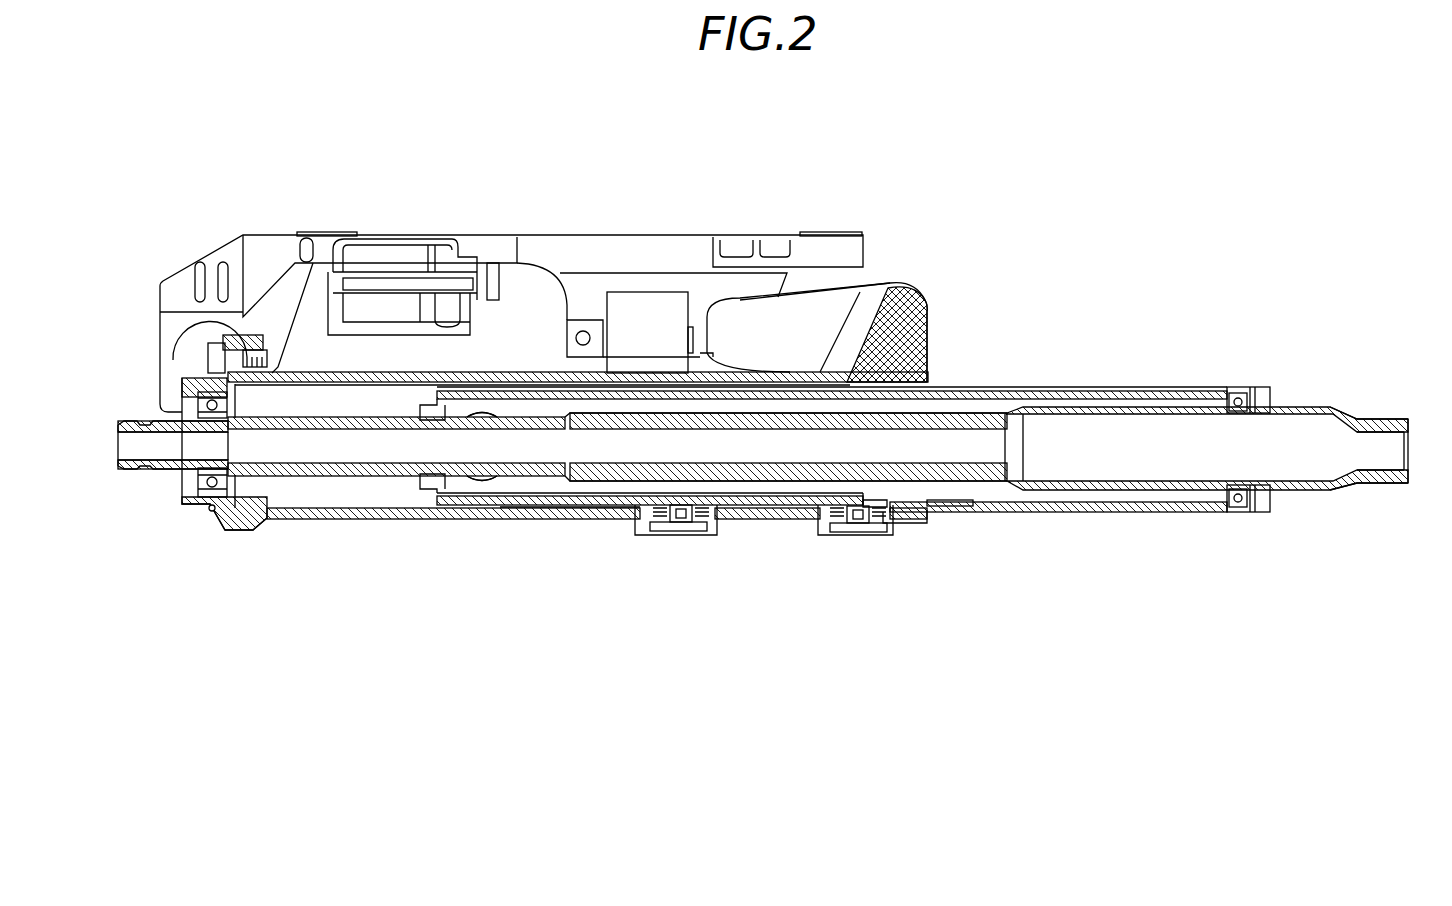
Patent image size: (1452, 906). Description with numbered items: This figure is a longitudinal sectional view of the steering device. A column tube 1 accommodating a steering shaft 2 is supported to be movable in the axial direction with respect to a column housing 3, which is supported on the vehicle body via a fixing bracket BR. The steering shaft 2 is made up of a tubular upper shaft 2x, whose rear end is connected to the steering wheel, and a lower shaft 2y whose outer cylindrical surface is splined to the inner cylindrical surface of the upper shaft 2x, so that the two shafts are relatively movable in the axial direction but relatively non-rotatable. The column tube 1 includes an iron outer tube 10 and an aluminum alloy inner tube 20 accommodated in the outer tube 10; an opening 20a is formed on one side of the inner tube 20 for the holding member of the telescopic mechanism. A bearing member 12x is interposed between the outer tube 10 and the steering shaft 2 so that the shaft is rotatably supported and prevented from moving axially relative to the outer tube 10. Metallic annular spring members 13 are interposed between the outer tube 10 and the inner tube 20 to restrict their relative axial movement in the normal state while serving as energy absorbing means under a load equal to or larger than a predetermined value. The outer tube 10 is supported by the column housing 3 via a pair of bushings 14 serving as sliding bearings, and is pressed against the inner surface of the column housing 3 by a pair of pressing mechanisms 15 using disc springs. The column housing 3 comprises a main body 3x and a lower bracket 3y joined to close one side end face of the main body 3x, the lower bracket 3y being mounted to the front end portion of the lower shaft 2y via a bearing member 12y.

The fixing bracket BR is at (250, 255).
The column tube 1 is at (1116, 389).
The steering shaft 2 is at (1348, 413).
The upper shaft 2x is at (1305, 491).
The lower shaft 2y is at (328, 477).
The column housing 3 is at (931, 380).
The main body 3x is at (568, 520).
The lower bracket 3y is at (230, 520).
The outer tube 10 is at (1120, 512).
The bearing member 12x is at (1240, 392).
The bearing member 12y is at (210, 502).
The annular spring member 13 is at (928, 312).
The bushing 14 is at (640, 521).
The pressing mechanism 15 is at (690, 537).
The inner tube 20 is at (455, 486).
The opening 20a is at (482, 479).